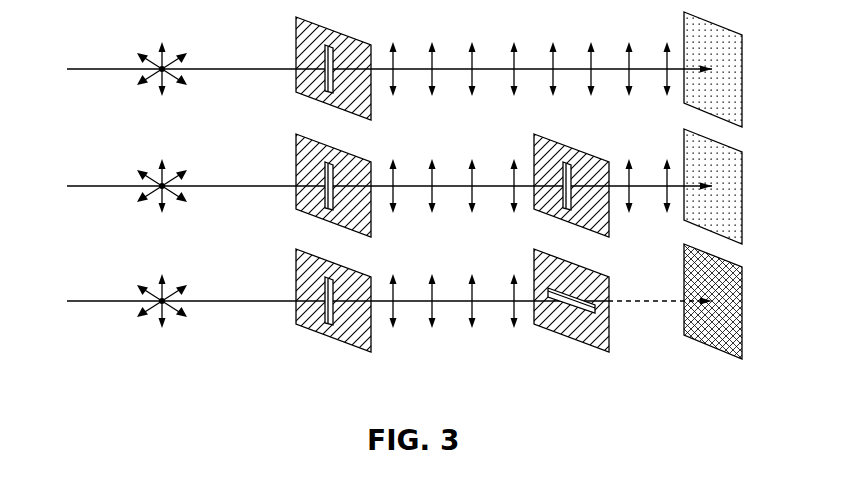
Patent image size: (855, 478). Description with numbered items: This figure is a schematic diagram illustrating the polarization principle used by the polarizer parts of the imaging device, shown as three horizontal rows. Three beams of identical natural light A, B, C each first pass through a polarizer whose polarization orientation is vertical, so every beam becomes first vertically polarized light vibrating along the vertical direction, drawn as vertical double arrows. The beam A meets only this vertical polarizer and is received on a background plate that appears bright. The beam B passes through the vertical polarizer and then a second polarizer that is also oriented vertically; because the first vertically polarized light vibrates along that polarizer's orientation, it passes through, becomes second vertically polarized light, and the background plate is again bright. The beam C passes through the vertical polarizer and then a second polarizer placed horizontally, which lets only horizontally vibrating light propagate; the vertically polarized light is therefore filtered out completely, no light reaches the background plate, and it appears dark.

The beam of natural light A is at (379, 69).
The beam of natural light B is at (379, 186).
The beam of natural light C is at (379, 301).